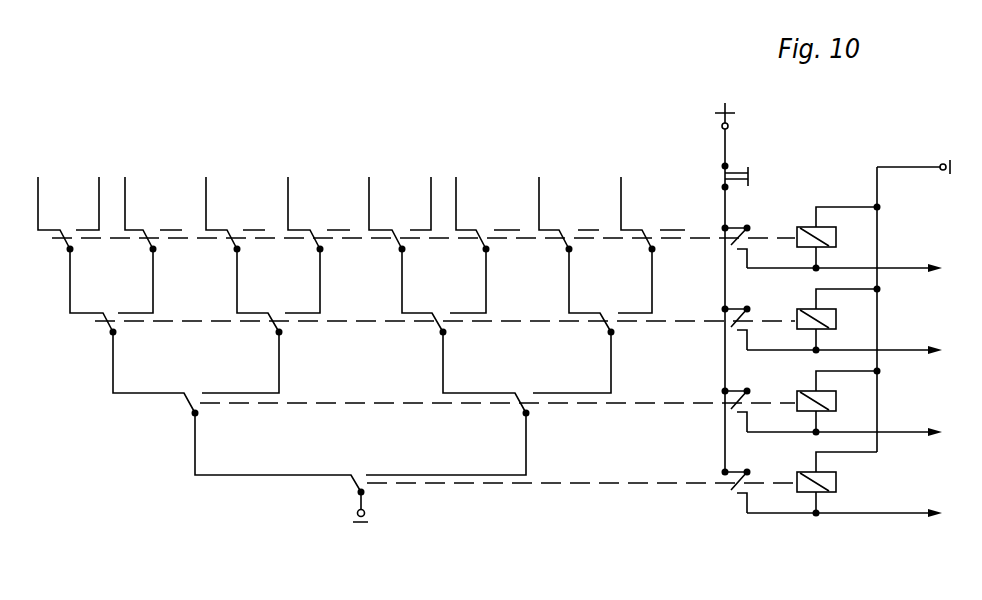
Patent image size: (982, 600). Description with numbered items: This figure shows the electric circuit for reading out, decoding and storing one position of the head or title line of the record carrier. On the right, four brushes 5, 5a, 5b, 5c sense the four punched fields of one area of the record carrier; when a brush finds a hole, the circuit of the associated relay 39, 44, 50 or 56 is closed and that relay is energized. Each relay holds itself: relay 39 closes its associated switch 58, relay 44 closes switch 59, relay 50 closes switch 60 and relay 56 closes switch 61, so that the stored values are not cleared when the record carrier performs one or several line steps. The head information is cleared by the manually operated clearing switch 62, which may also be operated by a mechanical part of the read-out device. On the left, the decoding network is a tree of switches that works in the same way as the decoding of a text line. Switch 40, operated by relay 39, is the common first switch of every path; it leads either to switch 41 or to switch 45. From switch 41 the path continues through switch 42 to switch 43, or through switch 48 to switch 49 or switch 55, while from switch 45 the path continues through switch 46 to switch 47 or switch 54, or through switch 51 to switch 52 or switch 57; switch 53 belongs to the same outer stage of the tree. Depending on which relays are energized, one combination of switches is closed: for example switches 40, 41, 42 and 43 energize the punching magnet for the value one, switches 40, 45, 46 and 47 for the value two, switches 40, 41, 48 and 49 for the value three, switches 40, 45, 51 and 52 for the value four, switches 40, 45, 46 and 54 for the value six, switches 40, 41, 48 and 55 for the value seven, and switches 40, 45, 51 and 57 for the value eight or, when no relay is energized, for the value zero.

The switch 57 is at (65, 241).
The switch 52 is at (150, 244).
The switch 47 is at (233, 243).
The switch 54 is at (316, 245).
The switch 43 is at (398, 246).
The switch 53 is at (483, 246).
The switch 49 is at (567, 246).
The switch 55 is at (648, 246).
The switch 51 is at (104, 324).
The switch 46 is at (273, 320).
The switch 42 is at (441, 323).
The switch 48 is at (612, 327).
The switch 45 is at (186, 401).
The switch 41 is at (522, 404).
The switch 40 is at (352, 482).
The clearing switch 62 is at (749, 171).
The switch 61 is at (727, 237).
The switch 60 is at (727, 318).
The switch 59 is at (727, 402).
The switch 58 is at (727, 483).
The relay 56 is at (805, 235).
The relay 50 is at (805, 317).
The relay 44 is at (803, 396).
The relay 39 is at (801, 477).
The brush 5c is at (857, 266).
The brush 5b is at (858, 346).
The brush 5a is at (859, 429).
The brush 5 is at (852, 511).